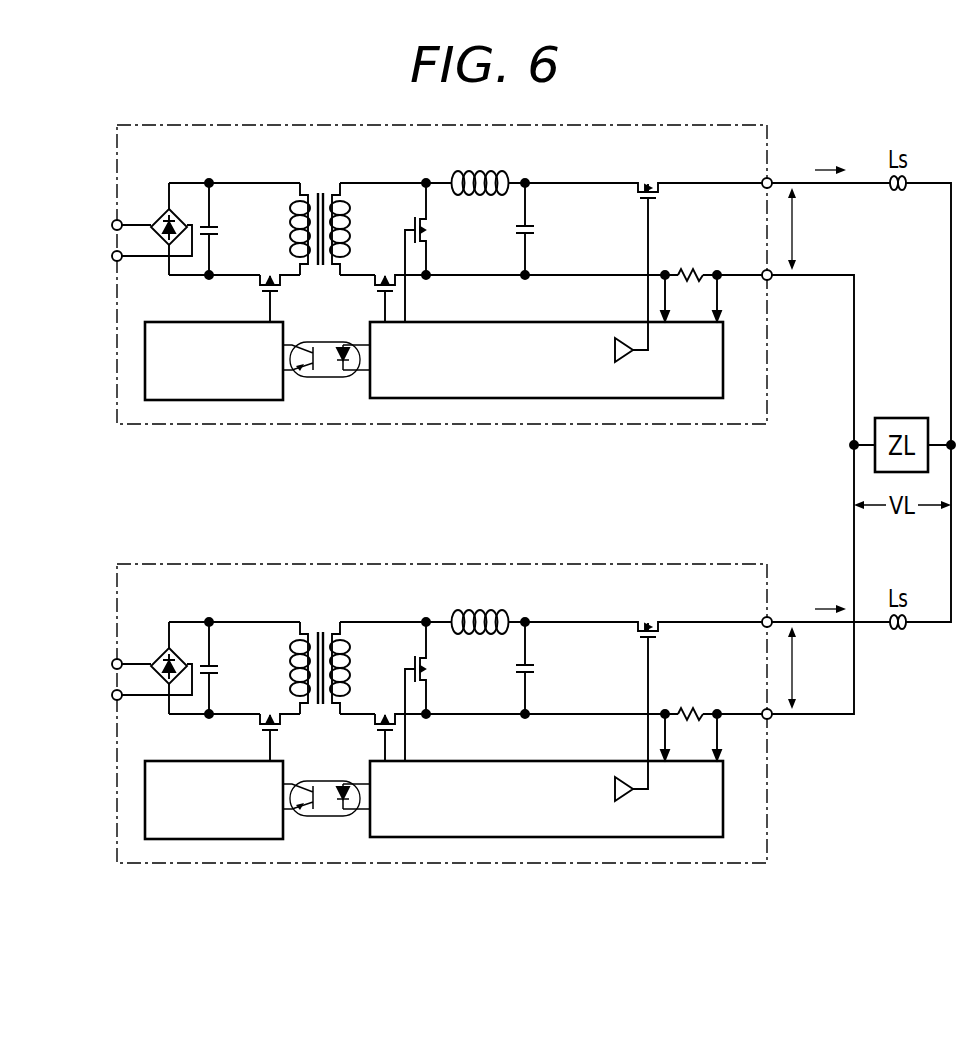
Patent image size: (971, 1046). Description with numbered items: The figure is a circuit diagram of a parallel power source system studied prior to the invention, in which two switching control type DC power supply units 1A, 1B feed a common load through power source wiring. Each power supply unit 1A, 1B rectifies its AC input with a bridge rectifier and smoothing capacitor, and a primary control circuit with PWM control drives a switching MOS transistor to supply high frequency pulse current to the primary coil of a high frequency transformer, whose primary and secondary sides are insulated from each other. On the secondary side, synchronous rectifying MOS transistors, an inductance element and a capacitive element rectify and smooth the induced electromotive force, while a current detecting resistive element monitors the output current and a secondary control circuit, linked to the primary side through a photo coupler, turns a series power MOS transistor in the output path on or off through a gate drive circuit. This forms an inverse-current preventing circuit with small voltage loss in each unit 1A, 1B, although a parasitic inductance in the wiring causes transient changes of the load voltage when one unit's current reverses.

The power supply unit 1A is at (400, 158).
The power supply unit 1B is at (445, 737).